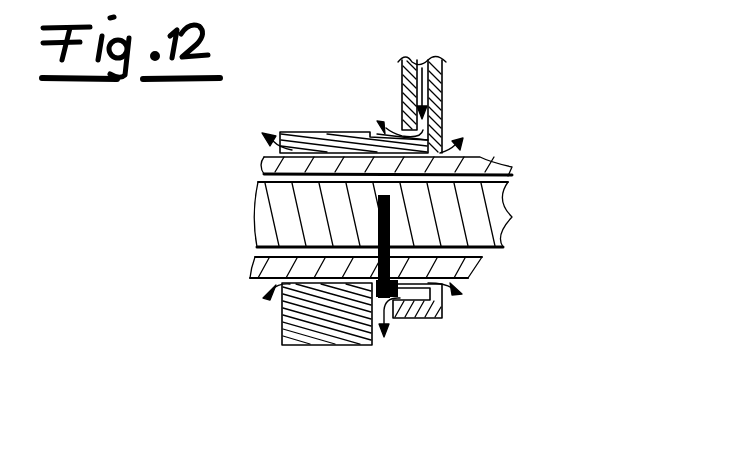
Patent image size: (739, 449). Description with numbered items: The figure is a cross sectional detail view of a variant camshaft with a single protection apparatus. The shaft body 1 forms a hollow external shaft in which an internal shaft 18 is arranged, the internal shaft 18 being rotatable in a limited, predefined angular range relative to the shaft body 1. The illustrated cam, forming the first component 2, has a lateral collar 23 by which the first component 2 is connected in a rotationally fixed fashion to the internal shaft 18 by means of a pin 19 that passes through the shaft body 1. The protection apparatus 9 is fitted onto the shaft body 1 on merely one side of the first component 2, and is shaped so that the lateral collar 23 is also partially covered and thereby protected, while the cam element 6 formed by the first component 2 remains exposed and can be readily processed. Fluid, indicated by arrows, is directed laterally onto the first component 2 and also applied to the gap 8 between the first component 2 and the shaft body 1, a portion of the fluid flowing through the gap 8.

The shaft body 1 is at (258, 266).
The first component 2 is at (302, 86).
The cam element 6 is at (317, 346).
The gap 8 is at (328, 138).
The protection apparatus 9 is at (422, 340).
The internal shaft 18 is at (267, 222).
The pin 19 is at (391, 222).
The lateral collar 23 is at (437, 301).